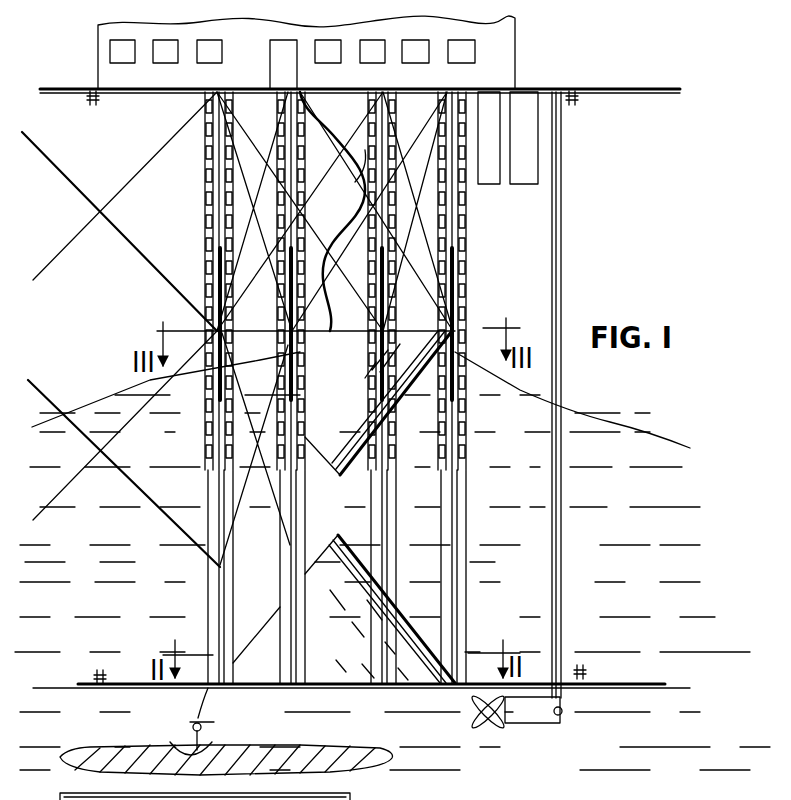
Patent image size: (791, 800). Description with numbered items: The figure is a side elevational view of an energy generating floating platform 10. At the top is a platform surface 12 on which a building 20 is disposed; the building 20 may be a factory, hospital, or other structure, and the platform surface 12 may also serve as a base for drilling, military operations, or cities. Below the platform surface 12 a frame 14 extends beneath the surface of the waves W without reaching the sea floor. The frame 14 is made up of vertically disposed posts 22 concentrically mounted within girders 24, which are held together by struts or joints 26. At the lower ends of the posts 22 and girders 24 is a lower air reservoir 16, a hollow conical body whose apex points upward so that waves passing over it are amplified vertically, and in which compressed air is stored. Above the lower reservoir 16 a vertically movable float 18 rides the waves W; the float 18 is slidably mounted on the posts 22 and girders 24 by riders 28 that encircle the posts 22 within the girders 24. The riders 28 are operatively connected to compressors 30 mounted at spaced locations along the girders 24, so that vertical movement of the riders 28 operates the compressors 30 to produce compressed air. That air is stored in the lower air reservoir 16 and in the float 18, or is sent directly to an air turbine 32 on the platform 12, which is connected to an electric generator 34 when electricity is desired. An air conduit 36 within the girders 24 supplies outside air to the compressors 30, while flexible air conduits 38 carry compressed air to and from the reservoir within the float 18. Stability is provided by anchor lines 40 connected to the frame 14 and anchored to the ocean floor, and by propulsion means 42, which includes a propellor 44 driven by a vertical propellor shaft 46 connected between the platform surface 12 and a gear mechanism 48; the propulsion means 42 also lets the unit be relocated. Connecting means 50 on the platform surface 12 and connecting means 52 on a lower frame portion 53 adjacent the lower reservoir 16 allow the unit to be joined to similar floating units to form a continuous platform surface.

The energy generating floating platform 10 is at (600, 180).
The platform surface 12 is at (75, 86).
The frame 14 is at (205, 605).
The lower air reservoir 16 is at (362, 692).
The float 18 is at (400, 395).
The building 20 is at (518, 47).
The posts 22 is at (210, 582).
The girders 24 is at (282, 597).
The struts 26 is at (147, 262).
The riders 28 is at (213, 250).
The compressors 30 is at (205, 163).
The air turbine 32 is at (489, 186).
The electric generator 34 is at (526, 186).
The air conduit 36 is at (303, 497).
The flexible air conduits 38 is at (333, 128).
The anchor lines 40 is at (205, 702).
The propulsion means 42 is at (540, 727).
The propellor 44 is at (487, 726).
The vertical propellor shaft 46 is at (560, 560).
The gear mechanism 48 is at (563, 713).
The connecting means 50 is at (95, 108).
The connecting means 52 is at (98, 672).
The lower frame portion 53 is at (660, 680).
The waves W is at (612, 420).